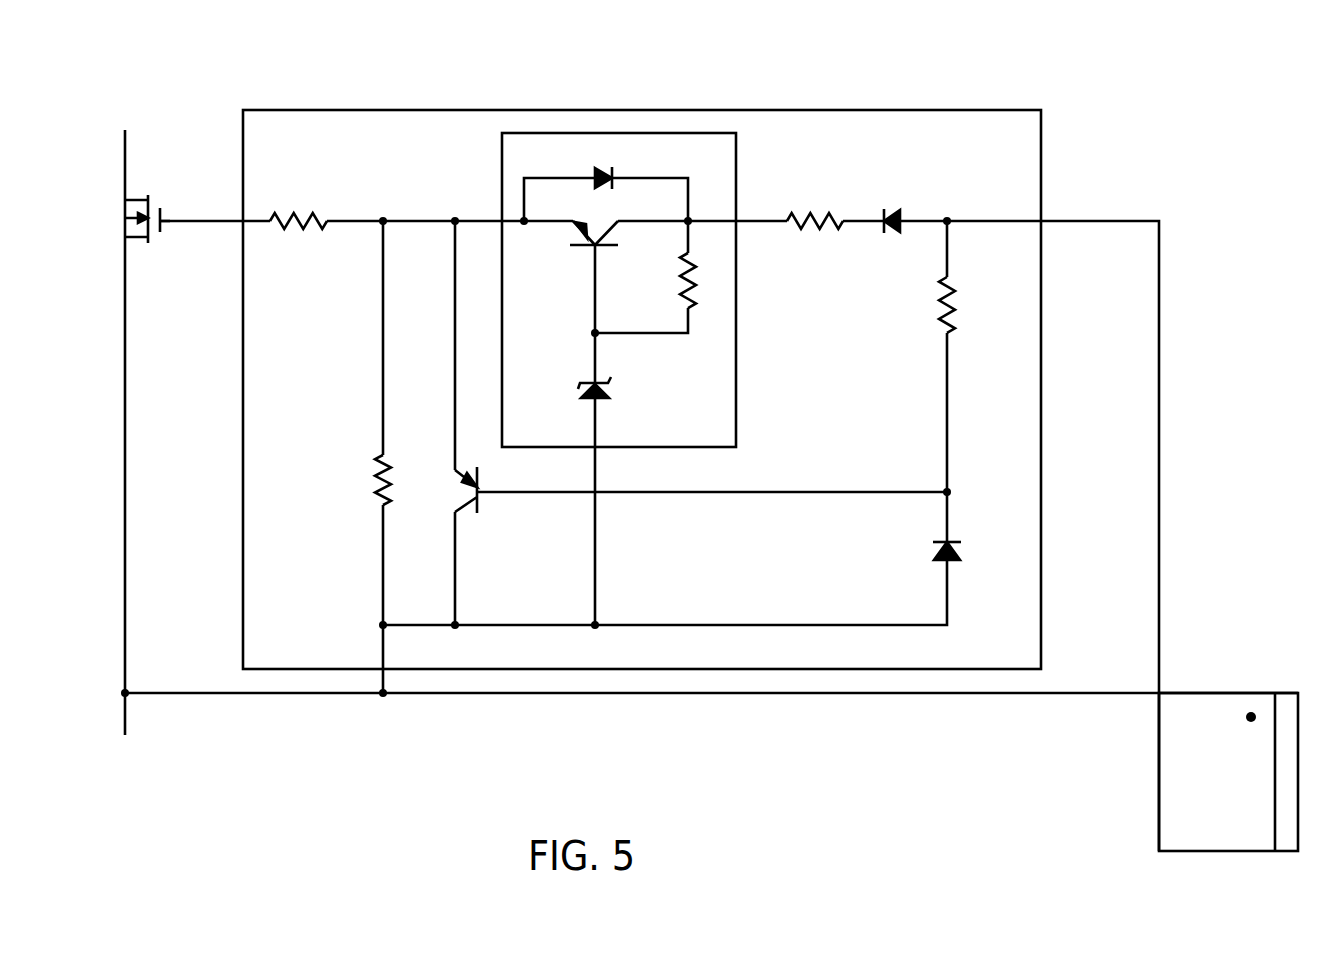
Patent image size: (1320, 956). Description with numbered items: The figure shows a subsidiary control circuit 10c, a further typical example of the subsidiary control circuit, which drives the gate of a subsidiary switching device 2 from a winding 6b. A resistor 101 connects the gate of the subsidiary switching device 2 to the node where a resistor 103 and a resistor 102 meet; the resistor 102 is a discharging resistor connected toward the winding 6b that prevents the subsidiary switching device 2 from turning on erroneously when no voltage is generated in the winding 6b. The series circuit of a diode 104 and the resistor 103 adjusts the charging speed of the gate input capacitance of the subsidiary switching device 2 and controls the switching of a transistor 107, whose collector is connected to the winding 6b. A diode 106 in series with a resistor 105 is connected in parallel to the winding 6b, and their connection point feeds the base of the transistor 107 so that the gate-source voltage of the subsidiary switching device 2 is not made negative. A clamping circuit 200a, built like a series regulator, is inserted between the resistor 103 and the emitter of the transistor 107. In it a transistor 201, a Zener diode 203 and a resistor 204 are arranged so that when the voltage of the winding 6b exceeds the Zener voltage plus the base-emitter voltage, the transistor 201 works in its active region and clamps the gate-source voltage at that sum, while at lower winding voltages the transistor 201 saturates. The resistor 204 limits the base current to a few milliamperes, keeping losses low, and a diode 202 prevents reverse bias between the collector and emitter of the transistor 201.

The subsidiary switching device 2 is at (122, 207).
The subsidiary control circuit 10c is at (432, 110).
The resistor 101 is at (317, 192).
The resistor 102 is at (367, 473).
The resistor 103 is at (810, 243).
The diode 104 is at (890, 193).
The resistor 105 is at (957, 343).
The diode 106 is at (922, 560).
The transistor 107 is at (478, 525).
The clamping circuit 200a is at (745, 375).
The transistor 201 is at (580, 257).
The diode 202 is at (611, 158).
The Zener diode 203 is at (628, 392).
The resistor 204 is at (710, 273).
The winding 6b is at (1265, 812).